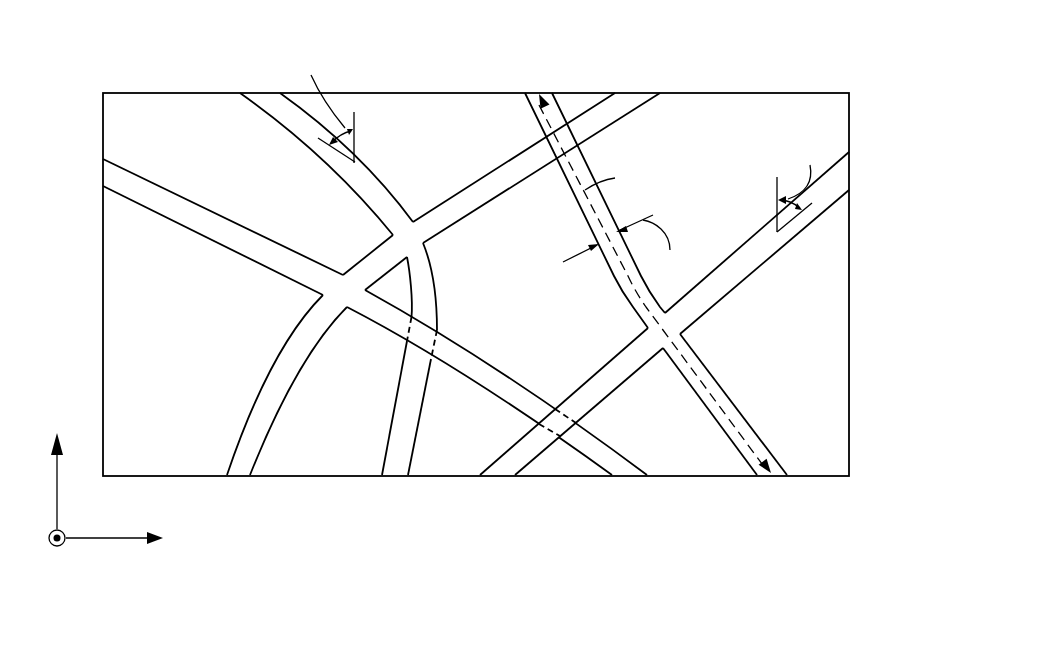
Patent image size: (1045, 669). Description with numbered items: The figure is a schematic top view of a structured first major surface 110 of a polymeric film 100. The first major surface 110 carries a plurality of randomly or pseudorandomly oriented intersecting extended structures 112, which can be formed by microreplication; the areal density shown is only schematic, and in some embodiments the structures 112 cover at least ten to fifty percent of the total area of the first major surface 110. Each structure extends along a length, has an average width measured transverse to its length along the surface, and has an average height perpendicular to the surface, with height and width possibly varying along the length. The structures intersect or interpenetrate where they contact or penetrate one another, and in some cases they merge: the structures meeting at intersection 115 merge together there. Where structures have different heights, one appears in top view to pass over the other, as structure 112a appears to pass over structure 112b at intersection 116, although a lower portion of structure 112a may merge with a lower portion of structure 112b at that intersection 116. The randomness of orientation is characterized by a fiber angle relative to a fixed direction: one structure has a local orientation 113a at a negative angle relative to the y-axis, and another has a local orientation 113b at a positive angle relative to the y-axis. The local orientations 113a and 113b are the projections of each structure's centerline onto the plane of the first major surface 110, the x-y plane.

The polymeric film 100 is at (108, 28).
The first major surface 110 is at (123, 270).
The extended structures 112 is at (271, 104).
The structure 112a is at (512, 463).
The structure 112b is at (621, 463).
The local orientation 113a is at (337, 157).
The local orientation 113b is at (797, 227).
The intersection 115 is at (348, 292).
The intersection 116 is at (553, 407).